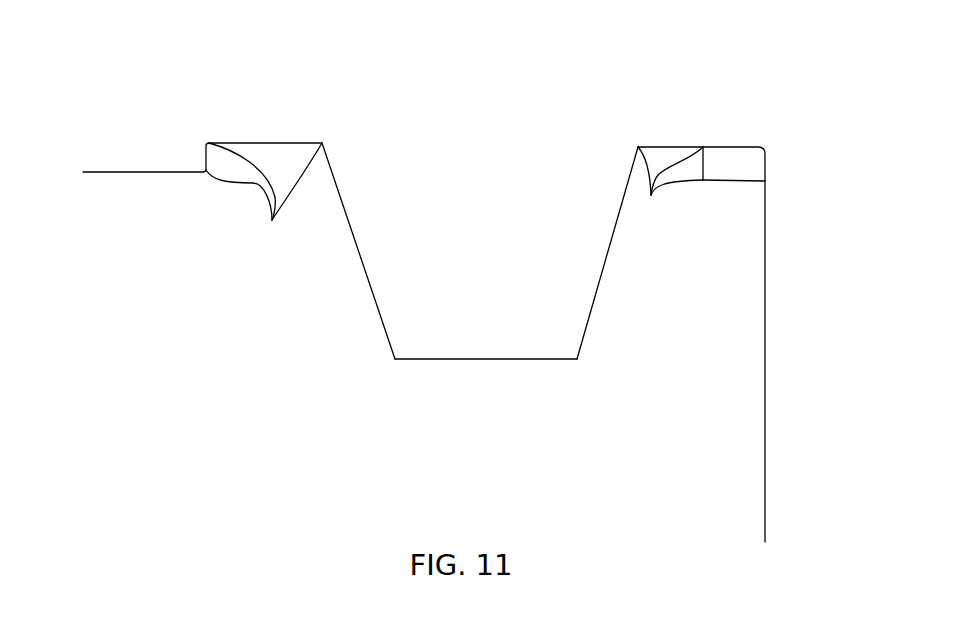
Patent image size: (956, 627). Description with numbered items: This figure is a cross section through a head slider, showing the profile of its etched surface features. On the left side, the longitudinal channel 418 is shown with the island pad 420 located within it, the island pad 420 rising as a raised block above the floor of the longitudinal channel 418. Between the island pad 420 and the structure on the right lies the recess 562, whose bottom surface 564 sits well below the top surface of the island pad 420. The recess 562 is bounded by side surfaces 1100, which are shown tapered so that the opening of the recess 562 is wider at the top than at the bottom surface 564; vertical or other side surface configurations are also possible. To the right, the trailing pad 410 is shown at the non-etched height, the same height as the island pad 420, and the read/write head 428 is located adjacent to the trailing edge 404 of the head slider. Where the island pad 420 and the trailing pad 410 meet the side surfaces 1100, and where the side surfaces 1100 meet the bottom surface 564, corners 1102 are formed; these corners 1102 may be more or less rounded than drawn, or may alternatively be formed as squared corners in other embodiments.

The trailing edge 404 is at (767, 350).
The trailing pad 410 is at (667, 147).
The longitudinal channel 418 is at (142, 151).
The island pad 420 is at (247, 143).
The read/write head 428 is at (767, 162).
The recess 562 is at (476, 215).
The bottom surface 564 is at (485, 359).
The side surfaces 1100 is at (362, 250).
The corners 1102 is at (272, 220).